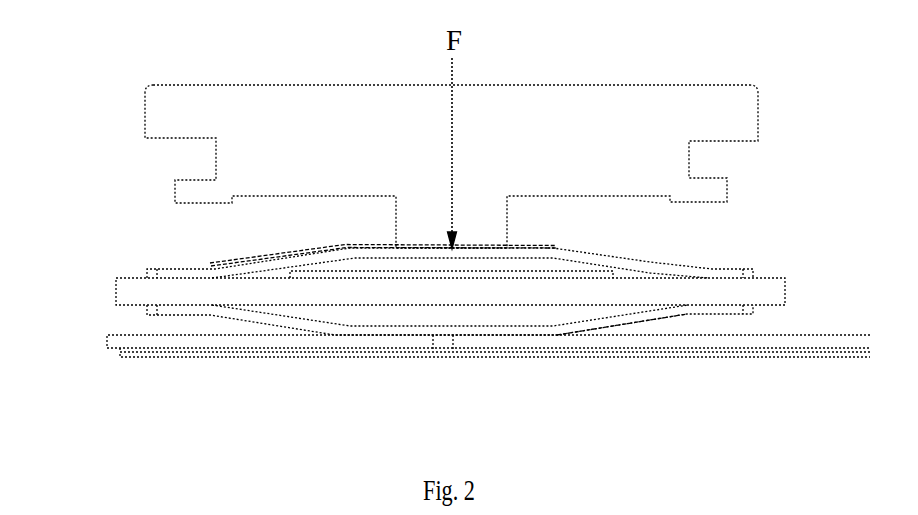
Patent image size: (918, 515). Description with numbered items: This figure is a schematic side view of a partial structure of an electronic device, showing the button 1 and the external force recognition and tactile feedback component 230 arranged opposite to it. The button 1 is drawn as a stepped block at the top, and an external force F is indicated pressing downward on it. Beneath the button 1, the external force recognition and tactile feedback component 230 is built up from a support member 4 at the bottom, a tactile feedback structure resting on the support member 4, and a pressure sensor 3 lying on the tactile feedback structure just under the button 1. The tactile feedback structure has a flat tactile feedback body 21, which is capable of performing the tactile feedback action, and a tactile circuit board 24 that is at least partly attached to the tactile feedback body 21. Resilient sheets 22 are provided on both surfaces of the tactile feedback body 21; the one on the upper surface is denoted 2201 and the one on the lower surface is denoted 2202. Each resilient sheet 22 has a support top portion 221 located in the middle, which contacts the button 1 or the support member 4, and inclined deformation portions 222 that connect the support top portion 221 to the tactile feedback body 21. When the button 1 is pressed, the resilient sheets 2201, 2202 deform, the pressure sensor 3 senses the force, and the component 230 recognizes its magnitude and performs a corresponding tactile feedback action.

The button 1 is at (573, 120).
The pressure sensor 3 is at (253, 257).
The support member 4 is at (235, 344).
The tactile feedback body 21 is at (768, 290).
The resilient sheet 22 is at (502, 324).
The tactile circuit board 24 is at (400, 276).
The support top portion 221 is at (485, 329).
The deformation portion 222 is at (605, 319).
The resilient sheet 2201 is at (646, 259).
The resilient sheet 2202 is at (663, 316).
The external force recognition and tactile feedback component 230 is at (93, 242).